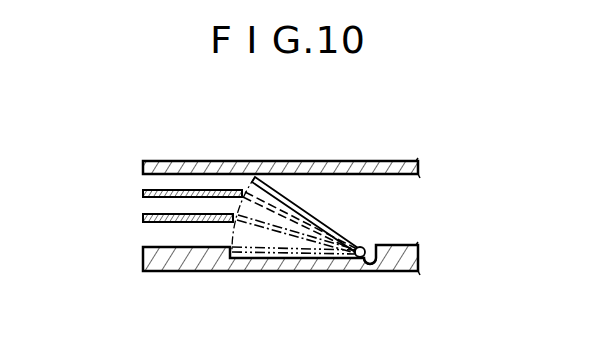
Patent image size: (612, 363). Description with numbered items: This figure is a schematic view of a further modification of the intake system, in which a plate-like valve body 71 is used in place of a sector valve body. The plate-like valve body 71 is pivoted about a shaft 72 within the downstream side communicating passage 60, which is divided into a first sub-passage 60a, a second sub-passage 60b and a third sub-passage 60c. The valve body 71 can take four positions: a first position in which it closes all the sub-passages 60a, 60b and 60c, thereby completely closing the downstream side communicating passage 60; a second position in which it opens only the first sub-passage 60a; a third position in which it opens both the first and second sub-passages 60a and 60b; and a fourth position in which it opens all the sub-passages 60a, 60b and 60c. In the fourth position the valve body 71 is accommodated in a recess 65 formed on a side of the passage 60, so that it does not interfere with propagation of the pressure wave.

The downstream side communicating passage 60 is at (244, 195).
The first sub-passage 60a is at (155, 185).
The second sub-passage 60b is at (155, 206).
The third sub-passage 60c is at (162, 238).
The plate-like valve body 71 is at (302, 192).
The shaft 72 is at (364, 246).
The recess 65 is at (383, 275).